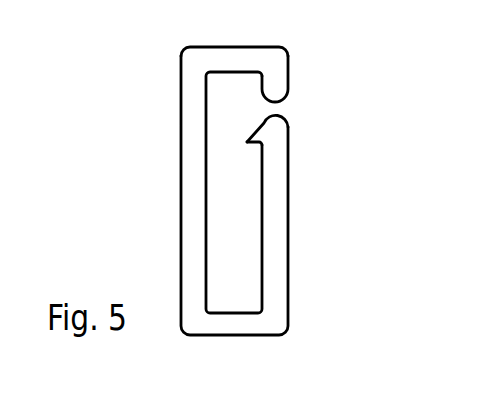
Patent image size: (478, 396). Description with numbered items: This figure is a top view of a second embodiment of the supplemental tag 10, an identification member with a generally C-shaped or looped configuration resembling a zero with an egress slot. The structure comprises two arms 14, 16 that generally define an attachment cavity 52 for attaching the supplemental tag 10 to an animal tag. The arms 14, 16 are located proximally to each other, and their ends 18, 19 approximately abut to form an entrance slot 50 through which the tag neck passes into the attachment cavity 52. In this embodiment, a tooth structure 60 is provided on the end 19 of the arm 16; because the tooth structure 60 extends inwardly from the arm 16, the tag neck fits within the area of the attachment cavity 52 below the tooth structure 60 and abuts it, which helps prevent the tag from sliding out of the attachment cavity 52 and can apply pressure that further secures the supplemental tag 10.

The supplemental tag 10 is at (176, 45).
The arm 14 is at (288, 68).
The arm 16 is at (288, 217).
The end 18 is at (261, 99).
The end 19 is at (287, 120).
The entrance slot 50 is at (267, 110).
The attachment cavity 52 is at (250, 282).
The tooth structure 60 is at (246, 141).